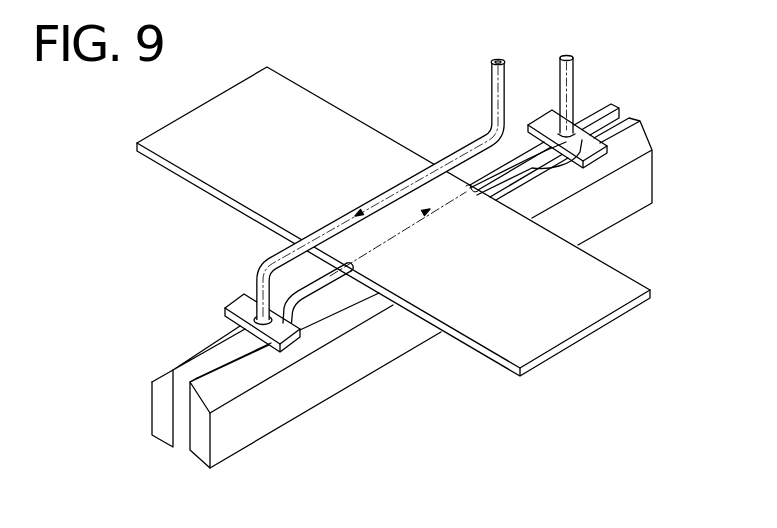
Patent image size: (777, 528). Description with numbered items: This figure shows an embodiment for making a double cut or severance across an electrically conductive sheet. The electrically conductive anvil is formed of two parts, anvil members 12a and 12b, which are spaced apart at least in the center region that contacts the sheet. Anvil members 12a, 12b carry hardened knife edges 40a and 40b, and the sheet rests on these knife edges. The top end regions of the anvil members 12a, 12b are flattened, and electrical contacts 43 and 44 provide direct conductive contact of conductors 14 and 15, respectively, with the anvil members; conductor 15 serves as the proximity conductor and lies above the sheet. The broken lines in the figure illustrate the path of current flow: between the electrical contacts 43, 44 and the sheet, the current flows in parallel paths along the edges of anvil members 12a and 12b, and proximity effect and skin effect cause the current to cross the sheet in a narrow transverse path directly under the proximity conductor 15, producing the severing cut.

The anvil member 12a is at (160, 420).
The anvil member 12b is at (202, 458).
The conductor 14 is at (574, 87).
The proximity conductor 15 is at (472, 141).
The hardened knife edge 40a is at (303, 291).
The hardened knife edge 40b is at (353, 271).
The electrical contact 43 is at (236, 305).
The electrical contact 44 is at (608, 143).